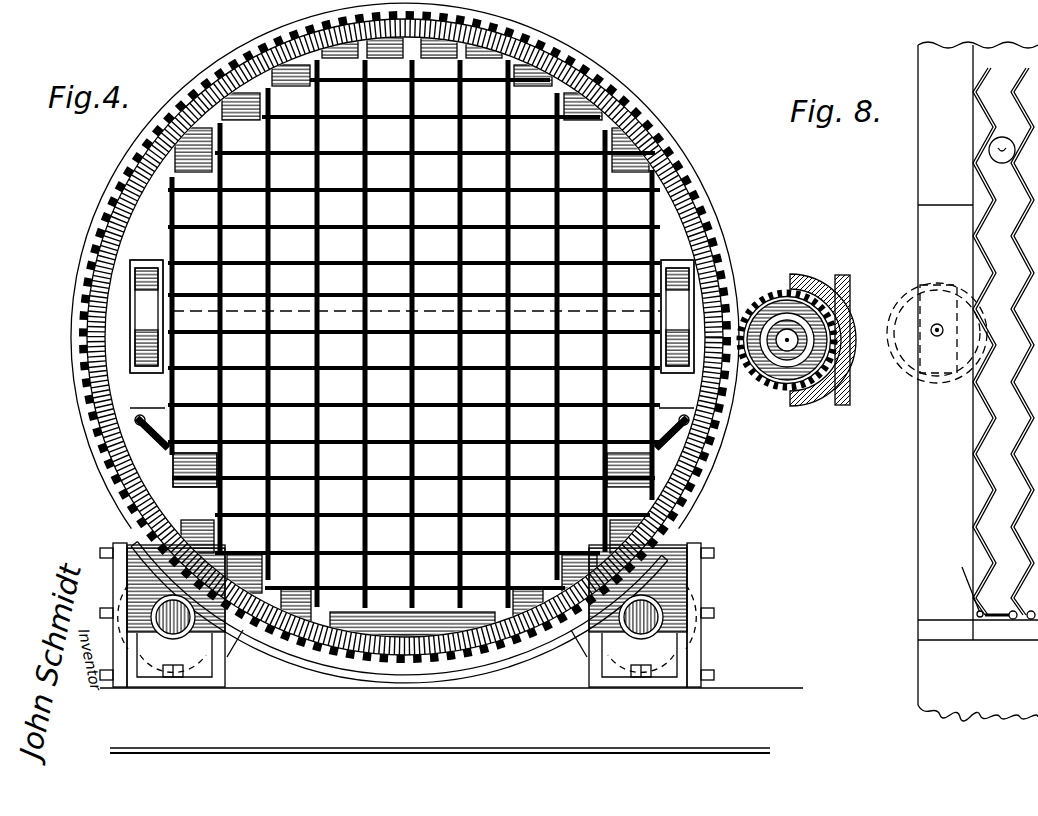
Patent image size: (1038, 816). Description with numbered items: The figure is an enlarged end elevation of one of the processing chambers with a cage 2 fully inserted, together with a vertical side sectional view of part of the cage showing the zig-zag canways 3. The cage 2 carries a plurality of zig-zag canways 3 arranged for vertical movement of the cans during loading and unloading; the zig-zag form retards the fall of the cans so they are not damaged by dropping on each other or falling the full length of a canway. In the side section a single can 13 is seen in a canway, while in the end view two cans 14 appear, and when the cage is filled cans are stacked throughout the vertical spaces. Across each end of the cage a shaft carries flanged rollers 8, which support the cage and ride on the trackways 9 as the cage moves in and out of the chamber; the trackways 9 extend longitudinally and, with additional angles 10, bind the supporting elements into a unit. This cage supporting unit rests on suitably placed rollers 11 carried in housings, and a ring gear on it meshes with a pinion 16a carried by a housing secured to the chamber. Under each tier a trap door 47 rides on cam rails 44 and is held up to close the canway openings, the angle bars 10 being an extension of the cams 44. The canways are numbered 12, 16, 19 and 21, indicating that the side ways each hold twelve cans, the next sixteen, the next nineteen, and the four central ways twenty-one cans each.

In FIG. 4, the cage 2 is at (166, 200).
In FIG. 8, the zig-zag canways 3 is at (983, 187).
In FIG. 4, the flanged rollers 8 is at (142, 302).
In FIG. 4, the trackways 9 is at (100, 393).
In FIG. 4, the angles 10 is at (272, 622).
In FIG. 4, the rollers 11 is at (126, 608).
In FIG. 4, the side canways of twelve cans 12 is at (738, 572).
In FIG. 8, the can 13 is at (993, 150).
In FIG. 4, the cans 14 is at (217, 523).
In FIG. 4, the canways of sixteen cans 16 is at (412, 337).
In FIG. 4, the pinion 16a is at (802, 385).
In FIG. 4, the canways of nineteen cans 19 is at (412, 334).
In FIG. 4, the central canways of twenty-one cans 21 is at (412, 334).
In FIG. 8, the cam rails 44 is at (1010, 625).
In FIG. 8, the trap door 47 is at (1003, 610).